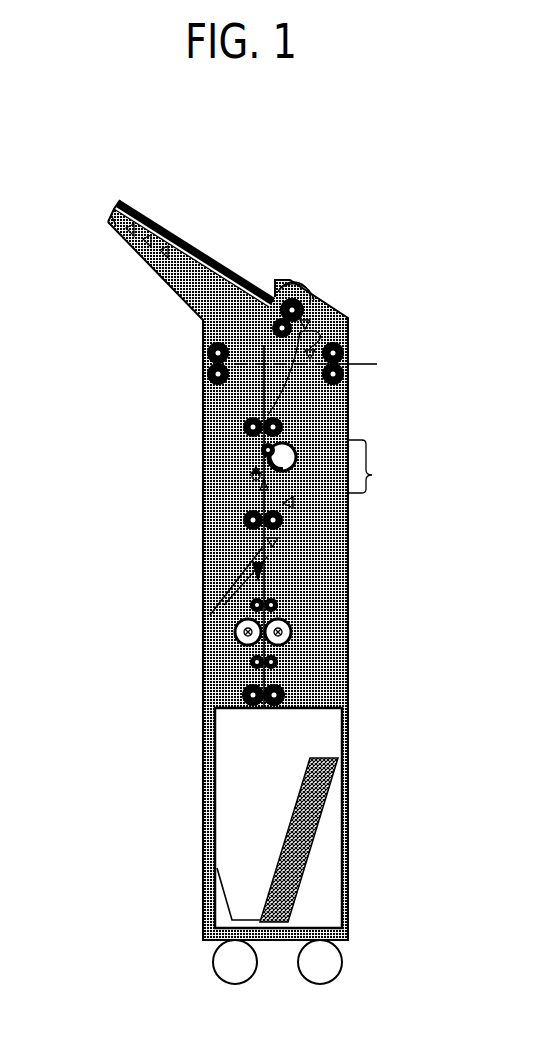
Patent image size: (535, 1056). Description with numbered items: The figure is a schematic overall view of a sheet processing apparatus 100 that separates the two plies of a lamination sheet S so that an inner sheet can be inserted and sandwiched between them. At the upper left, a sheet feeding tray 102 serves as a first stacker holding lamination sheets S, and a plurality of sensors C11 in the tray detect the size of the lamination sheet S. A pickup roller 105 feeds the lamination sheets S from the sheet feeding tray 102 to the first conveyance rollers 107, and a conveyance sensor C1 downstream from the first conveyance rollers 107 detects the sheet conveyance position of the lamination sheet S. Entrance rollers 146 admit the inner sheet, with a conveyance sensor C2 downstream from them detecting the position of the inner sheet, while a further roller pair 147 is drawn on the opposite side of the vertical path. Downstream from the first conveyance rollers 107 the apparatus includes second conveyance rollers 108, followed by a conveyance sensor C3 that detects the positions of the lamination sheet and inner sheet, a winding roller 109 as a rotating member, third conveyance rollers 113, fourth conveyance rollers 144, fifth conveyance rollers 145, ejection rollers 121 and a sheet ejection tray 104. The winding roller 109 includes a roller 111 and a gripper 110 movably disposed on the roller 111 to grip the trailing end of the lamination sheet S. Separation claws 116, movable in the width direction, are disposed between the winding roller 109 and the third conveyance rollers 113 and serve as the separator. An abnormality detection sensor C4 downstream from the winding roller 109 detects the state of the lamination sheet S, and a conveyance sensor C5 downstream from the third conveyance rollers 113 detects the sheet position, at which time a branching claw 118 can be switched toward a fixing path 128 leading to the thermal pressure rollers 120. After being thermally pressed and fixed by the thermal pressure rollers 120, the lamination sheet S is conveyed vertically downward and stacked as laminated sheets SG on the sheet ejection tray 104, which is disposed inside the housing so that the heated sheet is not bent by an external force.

The sheet processing apparatus 100 is at (298, 183).
The sheet feeding tray 102 is at (117, 208).
The lamination sheet S is at (165, 226).
The sensors C11 is at (116, 236).
The pickup roller 105 is at (273, 293).
The first conveyance rollers 107 is at (312, 284).
The conveyance sensor C1 is at (308, 317).
The conveyance sensor C2 is at (349, 322).
The conveying roller pair 147 is at (207, 350).
The entrance rollers 146 is at (345, 380).
The second conveyance rollers 108 is at (247, 423).
The conveyance sensor C3 is at (281, 431).
The gripper 110 is at (296, 452).
The roller 111 is at (284, 463).
The winding roller 109 is at (379, 466).
The separation claws 116 is at (251, 485).
The third conveyance rollers 113 is at (243, 522).
The abnormality detection sensor C4 is at (293, 506).
The branching claw 118 is at (248, 568).
The conveyance sensor C5 is at (276, 549).
The fixing path 128 is at (282, 598).
The fourth conveyance rollers 144 is at (279, 606).
The thermal pressure rollers 120 is at (235, 633).
The fifth conveyance rollers 145 is at (279, 663).
The ejection rollers 121 is at (242, 696).
The sheet ejection tray 104 is at (322, 818).
The laminated sheets SG is at (268, 880).